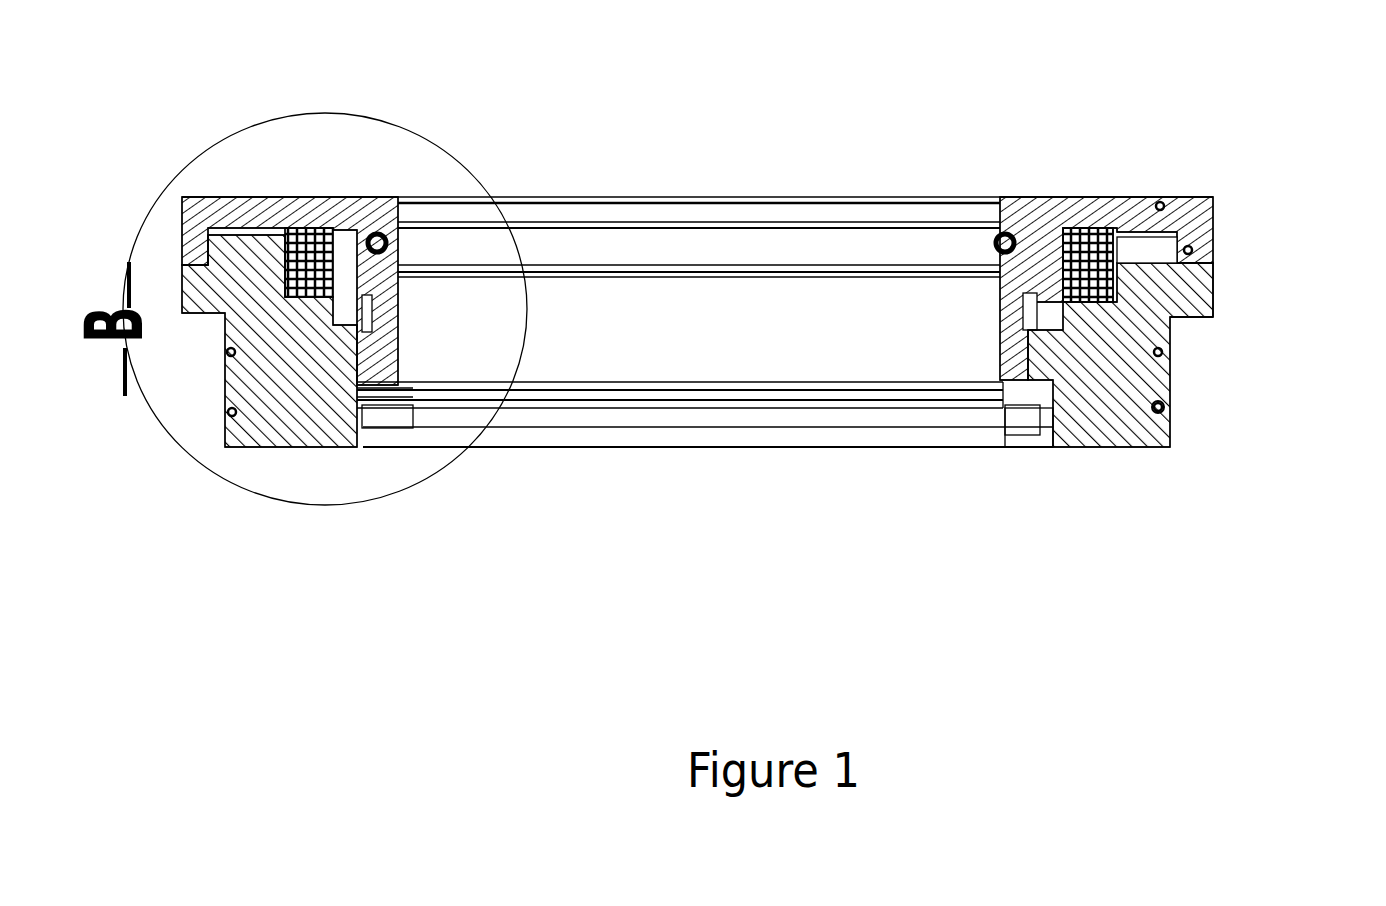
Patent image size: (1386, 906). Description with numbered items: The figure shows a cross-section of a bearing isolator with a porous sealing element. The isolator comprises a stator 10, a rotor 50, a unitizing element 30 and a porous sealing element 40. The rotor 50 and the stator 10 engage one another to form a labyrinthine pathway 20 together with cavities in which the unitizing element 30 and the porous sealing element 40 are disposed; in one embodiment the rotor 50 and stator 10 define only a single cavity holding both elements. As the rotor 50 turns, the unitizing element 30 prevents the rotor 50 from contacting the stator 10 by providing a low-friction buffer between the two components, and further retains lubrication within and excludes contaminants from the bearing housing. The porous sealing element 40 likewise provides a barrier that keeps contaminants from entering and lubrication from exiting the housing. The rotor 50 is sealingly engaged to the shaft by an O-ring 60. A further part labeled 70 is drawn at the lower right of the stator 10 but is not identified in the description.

The stator 10 is at (1082, 445).
The labyrinthine pathway 20 is at (1218, 270).
The unitizing element 30 is at (1000, 437).
The porous sealing element 40 is at (1070, 230).
The rotor 50 is at (1185, 198).
The O-ring 60 is at (1003, 240).
The fastener 70 is at (1170, 417).